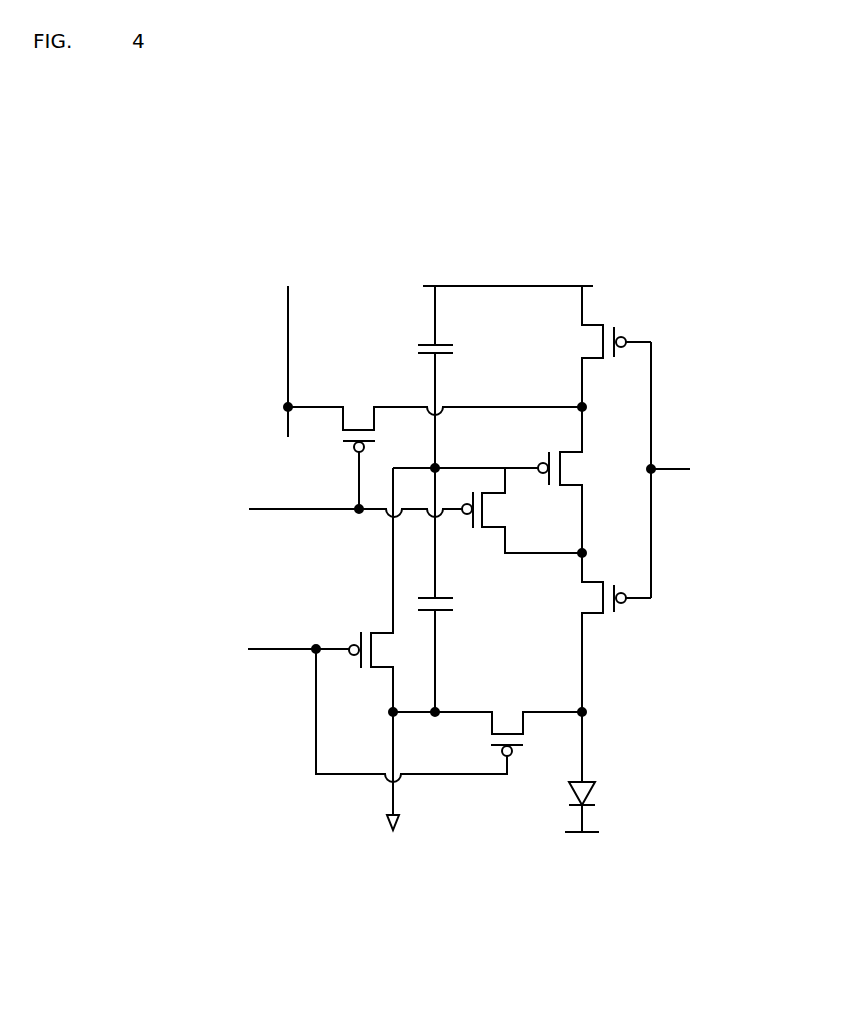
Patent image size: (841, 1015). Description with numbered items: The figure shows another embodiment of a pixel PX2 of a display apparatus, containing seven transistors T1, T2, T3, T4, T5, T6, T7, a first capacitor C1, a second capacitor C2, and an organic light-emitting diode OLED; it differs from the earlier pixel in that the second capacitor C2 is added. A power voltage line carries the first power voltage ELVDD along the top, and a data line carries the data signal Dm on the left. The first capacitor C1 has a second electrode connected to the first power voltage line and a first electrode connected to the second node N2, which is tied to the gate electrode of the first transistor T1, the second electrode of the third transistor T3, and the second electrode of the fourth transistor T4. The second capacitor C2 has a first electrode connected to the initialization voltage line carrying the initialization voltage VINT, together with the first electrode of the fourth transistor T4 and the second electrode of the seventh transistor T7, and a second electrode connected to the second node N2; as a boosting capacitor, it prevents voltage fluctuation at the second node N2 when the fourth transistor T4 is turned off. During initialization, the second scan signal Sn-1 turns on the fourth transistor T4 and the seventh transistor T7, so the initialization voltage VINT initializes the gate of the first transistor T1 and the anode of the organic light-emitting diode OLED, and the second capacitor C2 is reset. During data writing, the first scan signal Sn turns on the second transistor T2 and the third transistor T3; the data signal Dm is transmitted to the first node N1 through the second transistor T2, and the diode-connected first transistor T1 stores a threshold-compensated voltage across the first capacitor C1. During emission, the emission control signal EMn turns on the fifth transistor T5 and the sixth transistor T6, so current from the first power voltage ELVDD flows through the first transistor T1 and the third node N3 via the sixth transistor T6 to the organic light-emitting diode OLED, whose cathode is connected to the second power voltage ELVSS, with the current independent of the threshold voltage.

The pixel PX2 is at (640, 243).
The first power voltage ELVDD is at (518, 271).
The second power voltage ELVSS is at (575, 848).
The data signal Dm is at (292, 345).
The first scan signal Sn is at (337, 510).
The second scan signal Sn-1 is at (347, 710).
The emission control signal EMn is at (694, 470).
The initialization voltage VINT is at (391, 787).
The first transistor T1 is at (574, 480).
The second transistor T2 is at (435, 444).
The third transistor T3 is at (522, 510).
The fourth transistor T4 is at (385, 590).
The fifth transistor T5 is at (603, 346).
The sixth transistor T6 is at (603, 632).
The seventh transistor T7 is at (487, 720).
The first capacitor C1 is at (452, 377).
The second capacitor C2 is at (452, 592).
The first node N1 is at (599, 410).
The second node N2 is at (465, 455).
The third node N3 is at (598, 553).
The organic light-emitting diode OLED is at (613, 772).